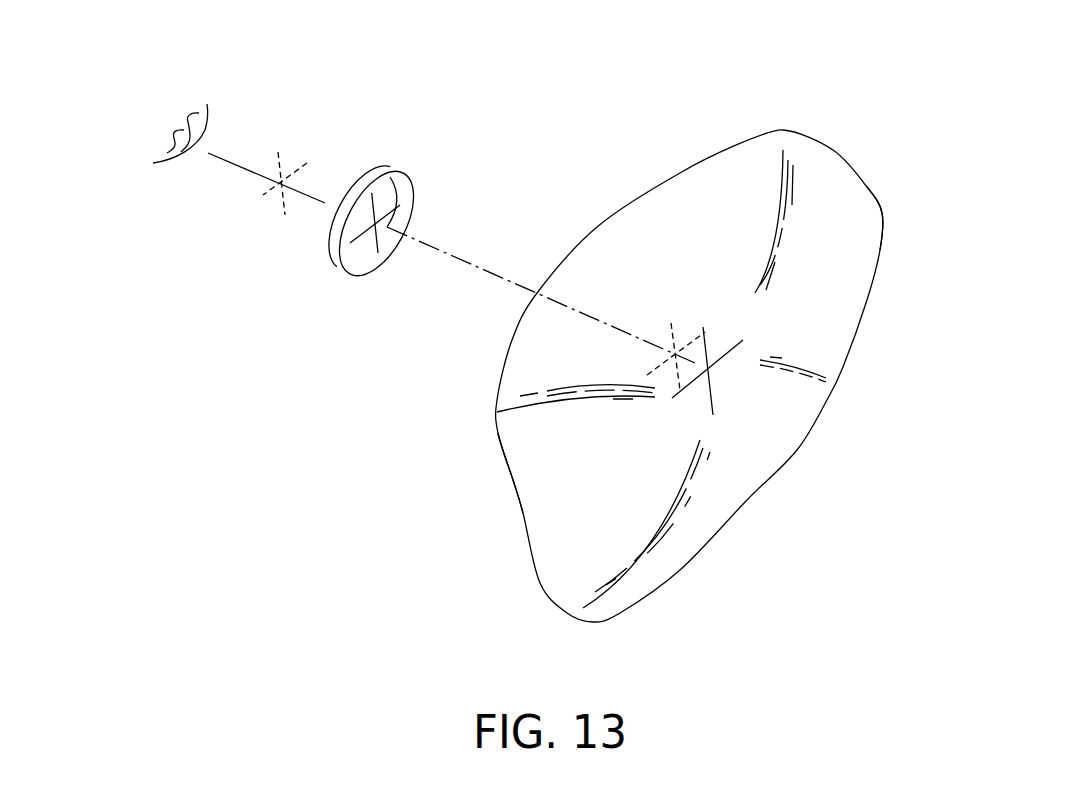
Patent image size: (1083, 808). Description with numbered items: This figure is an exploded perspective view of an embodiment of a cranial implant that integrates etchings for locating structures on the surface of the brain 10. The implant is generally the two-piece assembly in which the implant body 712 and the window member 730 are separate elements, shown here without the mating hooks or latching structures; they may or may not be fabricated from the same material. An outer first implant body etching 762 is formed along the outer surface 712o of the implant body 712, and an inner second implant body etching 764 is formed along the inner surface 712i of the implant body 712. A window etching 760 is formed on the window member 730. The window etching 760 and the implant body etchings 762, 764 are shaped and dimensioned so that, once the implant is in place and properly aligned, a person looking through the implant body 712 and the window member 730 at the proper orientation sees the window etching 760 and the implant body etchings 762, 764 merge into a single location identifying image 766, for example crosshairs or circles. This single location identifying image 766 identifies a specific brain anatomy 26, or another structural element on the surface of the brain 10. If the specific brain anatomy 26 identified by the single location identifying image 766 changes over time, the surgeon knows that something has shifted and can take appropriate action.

The brain 10 is at (160, 167).
The specific brain anatomy 26 is at (200, 147).
The implant body 712 is at (735, 163).
The outer surface of the implant body 712o is at (850, 222).
The inner surface of the implant body 712i is at (538, 498).
The window member 730 is at (333, 255).
The window etching 760 is at (393, 178).
The outer first implant body etching 762 is at (713, 396).
The inner second implant body etching 764 is at (670, 327).
The single location identifying image 766 is at (265, 200).